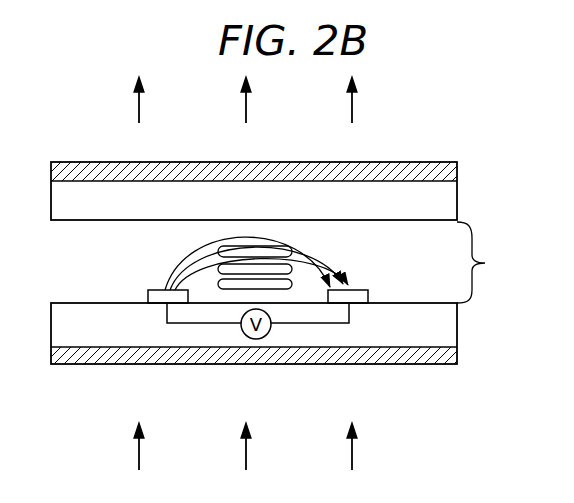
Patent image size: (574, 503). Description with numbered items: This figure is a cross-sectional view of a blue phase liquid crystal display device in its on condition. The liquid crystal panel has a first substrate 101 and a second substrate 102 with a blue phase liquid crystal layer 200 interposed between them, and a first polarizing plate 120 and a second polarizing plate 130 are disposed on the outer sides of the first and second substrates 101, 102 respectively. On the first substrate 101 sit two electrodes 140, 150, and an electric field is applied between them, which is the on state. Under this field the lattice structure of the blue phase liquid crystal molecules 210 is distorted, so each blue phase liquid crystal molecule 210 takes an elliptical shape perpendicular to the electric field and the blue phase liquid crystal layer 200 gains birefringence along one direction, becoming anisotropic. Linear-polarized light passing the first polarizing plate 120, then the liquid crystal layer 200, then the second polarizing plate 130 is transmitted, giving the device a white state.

The first substrate 101 is at (447, 322).
The second substrate 102 is at (447, 205).
The first polarizing plate 120 is at (447, 353).
The second polarizing plate 130 is at (447, 172).
The electrode 140 is at (163, 292).
The electrode 150 is at (360, 289).
The blue phase liquid crystal layer 200 is at (492, 262).
The blue phase liquid crystal molecule 210 is at (298, 249).